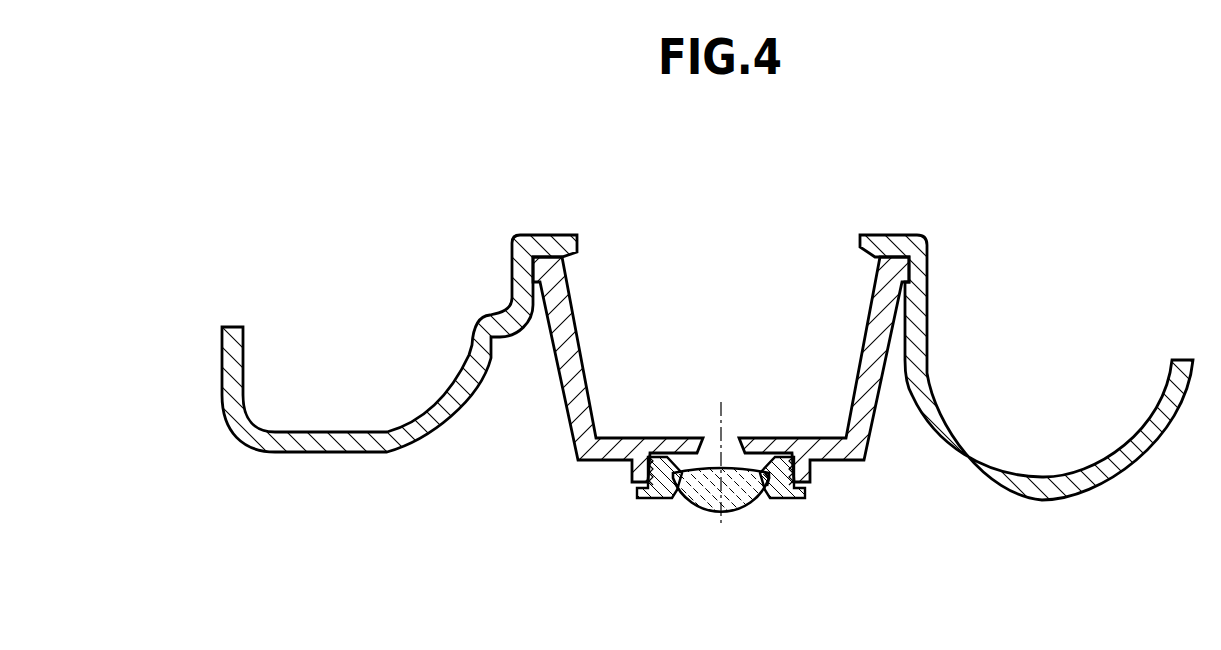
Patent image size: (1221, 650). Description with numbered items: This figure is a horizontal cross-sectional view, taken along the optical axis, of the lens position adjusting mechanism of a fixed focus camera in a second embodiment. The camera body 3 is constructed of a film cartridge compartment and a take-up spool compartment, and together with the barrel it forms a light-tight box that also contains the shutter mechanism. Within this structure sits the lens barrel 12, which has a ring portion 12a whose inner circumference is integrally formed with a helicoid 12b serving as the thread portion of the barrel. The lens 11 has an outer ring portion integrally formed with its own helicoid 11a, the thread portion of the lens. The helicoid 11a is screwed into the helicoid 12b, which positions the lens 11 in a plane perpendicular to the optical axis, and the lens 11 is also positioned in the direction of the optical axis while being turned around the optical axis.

The camera body 3 is at (340, 447).
The lens barrel 12 is at (572, 394).
The ring portion 12a is at (633, 473).
The helicoid 12b is at (813, 466).
The lens 11 is at (740, 497).
The helicoid 11a is at (783, 497).